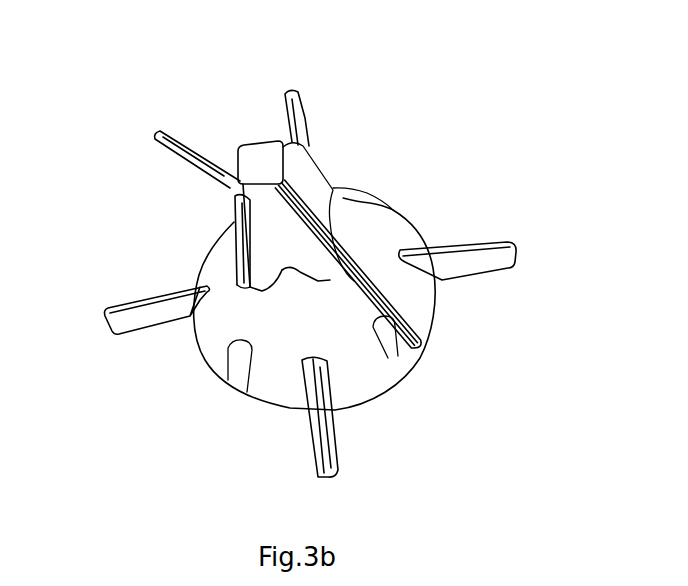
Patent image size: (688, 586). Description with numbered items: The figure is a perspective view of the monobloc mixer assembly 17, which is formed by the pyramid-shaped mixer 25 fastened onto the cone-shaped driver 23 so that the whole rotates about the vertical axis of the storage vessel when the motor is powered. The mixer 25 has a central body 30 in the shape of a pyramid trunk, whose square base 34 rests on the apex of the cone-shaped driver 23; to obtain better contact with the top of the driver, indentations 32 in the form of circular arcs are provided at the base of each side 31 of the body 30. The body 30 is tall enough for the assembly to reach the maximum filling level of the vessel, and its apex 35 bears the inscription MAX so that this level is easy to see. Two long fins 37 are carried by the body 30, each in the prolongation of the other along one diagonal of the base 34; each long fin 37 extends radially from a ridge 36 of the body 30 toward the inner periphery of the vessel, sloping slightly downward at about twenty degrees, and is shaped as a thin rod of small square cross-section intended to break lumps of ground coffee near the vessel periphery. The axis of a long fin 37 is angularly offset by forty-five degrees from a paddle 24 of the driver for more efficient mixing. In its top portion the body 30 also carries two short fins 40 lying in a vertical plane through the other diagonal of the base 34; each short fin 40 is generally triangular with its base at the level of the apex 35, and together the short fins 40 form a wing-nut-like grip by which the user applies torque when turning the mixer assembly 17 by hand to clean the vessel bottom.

The mixer assembly 17 is at (481, 115).
The cone-shaped driver 23 is at (399, 231).
The paddle 24 is at (519, 237).
The pyramid-shaped mixer 25 is at (326, 183).
The central body 30 is at (210, 101).
The side 31 is at (268, 271).
The indentation 32 is at (284, 288).
The square base 34 is at (355, 197).
The apex 35 is at (263, 133).
The ridge 36 is at (228, 287).
The long fin 37 is at (158, 155).
The short fin 40 is at (229, 220).